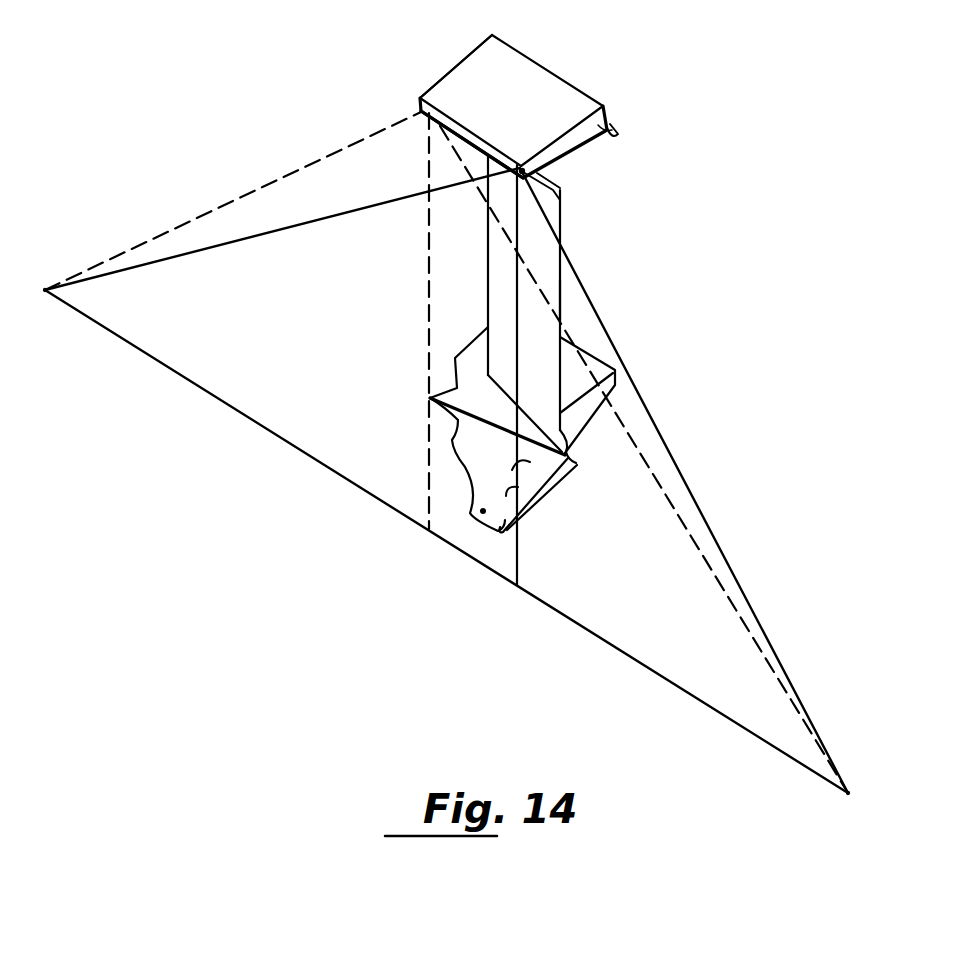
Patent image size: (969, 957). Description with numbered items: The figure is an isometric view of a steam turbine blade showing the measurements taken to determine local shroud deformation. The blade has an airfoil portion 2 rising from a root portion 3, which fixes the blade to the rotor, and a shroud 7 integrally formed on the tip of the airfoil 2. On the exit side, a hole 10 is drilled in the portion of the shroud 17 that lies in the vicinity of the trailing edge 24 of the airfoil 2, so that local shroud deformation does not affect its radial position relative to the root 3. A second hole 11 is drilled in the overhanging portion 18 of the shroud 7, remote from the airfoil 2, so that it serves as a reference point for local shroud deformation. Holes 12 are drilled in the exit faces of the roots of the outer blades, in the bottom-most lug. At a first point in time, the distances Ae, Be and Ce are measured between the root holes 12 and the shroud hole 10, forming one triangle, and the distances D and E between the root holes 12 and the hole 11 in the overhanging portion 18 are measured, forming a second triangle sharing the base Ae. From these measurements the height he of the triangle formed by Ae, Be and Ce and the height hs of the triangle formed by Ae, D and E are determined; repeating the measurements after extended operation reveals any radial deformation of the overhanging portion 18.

The airfoil portion 2 is at (560, 268).
The root portion 3 is at (615, 387).
The shroud 7 is at (603, 107).
The hole 10 is at (522, 166).
The hole 11 is at (432, 112).
The hole 12 is at (45, 290).
The portion of the shroud 17 is at (557, 199).
The overhanging portion of the shroud 18 is at (435, 85).
The trailing edge 24 is at (560, 297).
The distance Ae is at (607, 643).
The distance Be is at (690, 488).
The distance Ce is at (267, 236).
The distance D is at (675, 513).
The distance E is at (275, 183).
The height hs is at (429, 325).
The height he is at (517, 337).